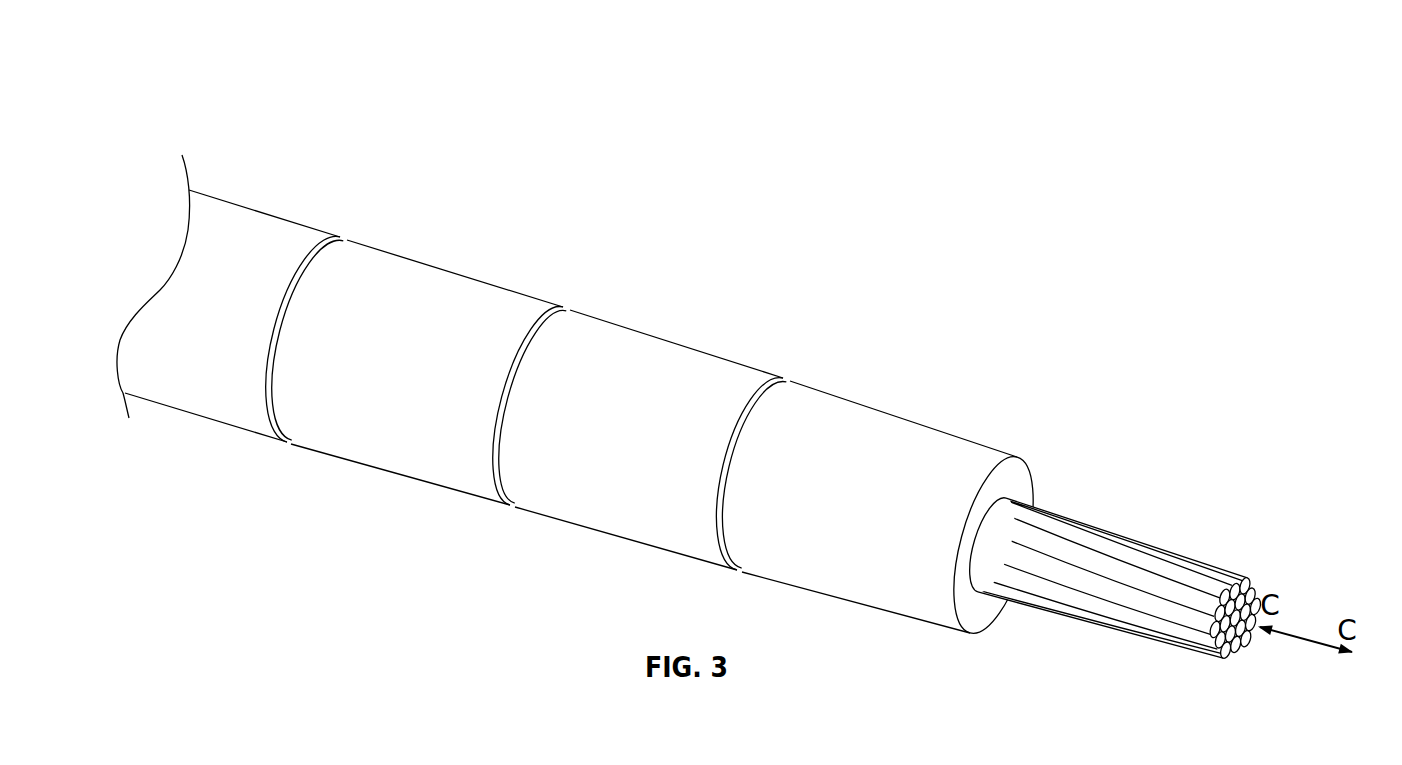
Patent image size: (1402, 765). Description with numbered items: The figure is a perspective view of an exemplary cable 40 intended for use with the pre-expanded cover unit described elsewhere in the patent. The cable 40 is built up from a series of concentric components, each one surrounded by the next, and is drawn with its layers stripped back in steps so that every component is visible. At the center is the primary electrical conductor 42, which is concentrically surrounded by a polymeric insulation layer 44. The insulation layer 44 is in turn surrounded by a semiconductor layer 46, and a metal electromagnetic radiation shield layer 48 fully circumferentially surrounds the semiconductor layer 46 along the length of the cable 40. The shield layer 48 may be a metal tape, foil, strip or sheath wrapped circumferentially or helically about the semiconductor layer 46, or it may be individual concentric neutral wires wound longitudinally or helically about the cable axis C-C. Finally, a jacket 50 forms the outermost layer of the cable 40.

The cable 40 is at (233, 83).
The primary electrical conductor 42 is at (1072, 543).
The polymeric insulation layer 44 is at (893, 443).
The semiconductor layer 46 is at (665, 370).
The metal electromagnetic radiation shield layer 48 is at (437, 293).
The jacket 50 is at (225, 220).